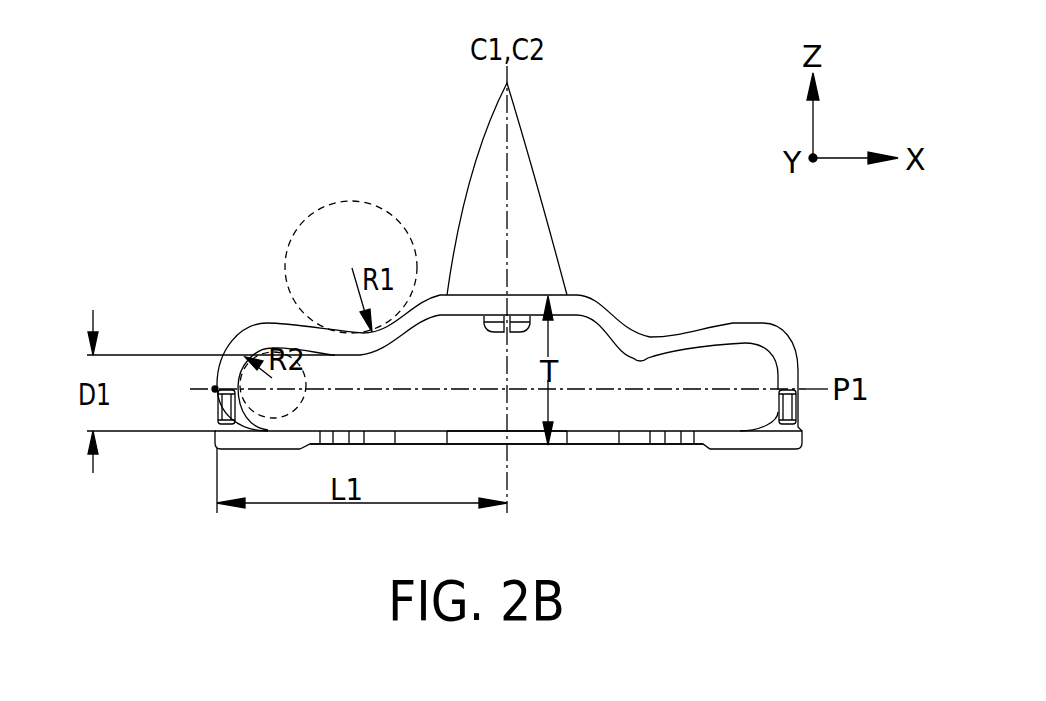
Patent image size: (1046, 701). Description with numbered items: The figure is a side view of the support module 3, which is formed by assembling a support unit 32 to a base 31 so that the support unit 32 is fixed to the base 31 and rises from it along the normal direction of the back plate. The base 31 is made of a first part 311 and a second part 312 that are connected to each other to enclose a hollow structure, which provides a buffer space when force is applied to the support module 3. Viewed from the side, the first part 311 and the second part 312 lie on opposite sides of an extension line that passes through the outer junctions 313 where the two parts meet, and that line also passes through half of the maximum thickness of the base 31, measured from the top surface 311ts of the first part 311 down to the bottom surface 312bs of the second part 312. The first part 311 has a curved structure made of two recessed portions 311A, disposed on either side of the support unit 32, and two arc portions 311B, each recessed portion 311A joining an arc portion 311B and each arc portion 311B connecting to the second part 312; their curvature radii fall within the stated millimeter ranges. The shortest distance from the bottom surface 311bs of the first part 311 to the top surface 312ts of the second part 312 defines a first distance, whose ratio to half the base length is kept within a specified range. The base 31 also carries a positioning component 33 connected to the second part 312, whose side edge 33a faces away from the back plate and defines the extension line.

The support module 3 is at (133, 203).
The base 31 is at (872, 310).
The first part 311 is at (783, 342).
The recessed portion 311A is at (703, 338).
The arc portion 311B is at (243, 340).
The top surface of the first part 311ts is at (542, 295).
The bottom surface of the first part 311bs is at (637, 358).
The second part 312 is at (797, 433).
The bottom surface of the second part 312bs is at (585, 447).
The top surface of the second part 312ts is at (604, 430).
The outer junction 313 is at (212, 393).
The support unit 32 is at (533, 184).
The positioning component 33 is at (777, 407).
The side edge 33a is at (215, 388).